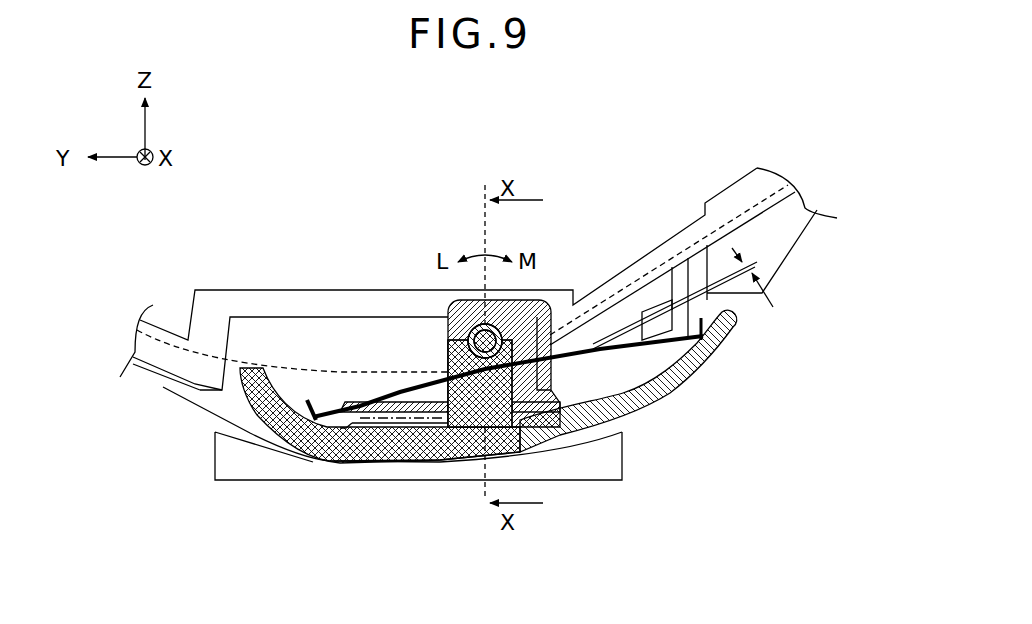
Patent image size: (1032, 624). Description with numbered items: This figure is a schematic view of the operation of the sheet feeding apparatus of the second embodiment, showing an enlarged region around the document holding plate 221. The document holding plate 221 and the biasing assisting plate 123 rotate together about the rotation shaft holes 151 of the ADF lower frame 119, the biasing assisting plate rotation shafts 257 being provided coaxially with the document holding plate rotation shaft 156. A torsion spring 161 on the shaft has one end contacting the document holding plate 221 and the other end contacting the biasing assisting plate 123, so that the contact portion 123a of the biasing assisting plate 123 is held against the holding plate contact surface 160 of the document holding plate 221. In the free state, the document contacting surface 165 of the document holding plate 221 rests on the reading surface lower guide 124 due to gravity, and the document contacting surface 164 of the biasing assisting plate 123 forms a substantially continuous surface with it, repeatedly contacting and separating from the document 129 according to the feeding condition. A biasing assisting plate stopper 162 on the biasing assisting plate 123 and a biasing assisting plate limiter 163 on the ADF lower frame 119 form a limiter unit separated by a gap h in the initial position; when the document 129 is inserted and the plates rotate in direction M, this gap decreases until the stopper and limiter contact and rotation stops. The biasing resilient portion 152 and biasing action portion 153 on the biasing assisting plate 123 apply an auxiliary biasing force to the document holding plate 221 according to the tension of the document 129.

The ADF lower frame 119 is at (200, 313).
The document 129 is at (163, 385).
The document holding plate 221 is at (262, 413).
The biasing resilient portion 152 is at (345, 413).
The torsion spring 161 is at (405, 400).
The rotation shaft holes 151 is at (501, 281).
The document holding plate rotation shaft 156 is at (545, 300).
The biasing assisting plate rotation shaft 257 is at (585, 165).
The biasing assisting plate 123 is at (622, 378).
The contact portion 123a is at (573, 437).
The reading surface lower guide 124 is at (608, 483).
The biasing action portion 153 is at (347, 417).
The document contacting surface 165 is at (410, 457).
The holding plate contact surface 160 is at (537, 437).
The biasing assisting plate stopper 162 is at (645, 335).
The biasing assisting plate limiter 163 is at (690, 375).
The document contacting surface 164 is at (727, 340).